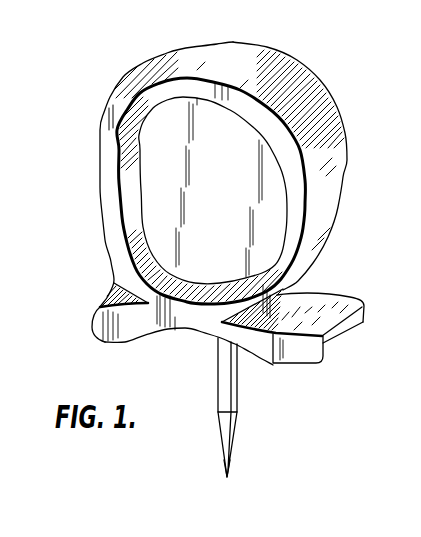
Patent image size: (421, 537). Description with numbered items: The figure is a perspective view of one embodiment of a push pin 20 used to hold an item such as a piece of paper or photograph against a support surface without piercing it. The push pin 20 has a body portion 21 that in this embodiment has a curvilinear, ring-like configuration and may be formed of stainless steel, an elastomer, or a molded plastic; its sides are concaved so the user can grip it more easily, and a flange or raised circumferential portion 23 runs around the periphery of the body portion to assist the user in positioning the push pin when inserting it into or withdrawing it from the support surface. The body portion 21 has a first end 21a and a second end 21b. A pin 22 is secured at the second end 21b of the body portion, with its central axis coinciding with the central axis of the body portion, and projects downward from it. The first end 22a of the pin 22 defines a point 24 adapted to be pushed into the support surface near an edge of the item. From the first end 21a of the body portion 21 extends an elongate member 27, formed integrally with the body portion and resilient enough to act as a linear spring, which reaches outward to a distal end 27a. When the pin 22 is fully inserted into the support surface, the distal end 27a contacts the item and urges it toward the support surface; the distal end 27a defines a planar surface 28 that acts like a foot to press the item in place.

The push pin 20 is at (318, 62).
The body portion 21 is at (227, 195).
The first end of body portion 21a is at (262, 65).
The second end of body portion 21b is at (190, 330).
The pin 22 is at (235, 394).
The first end of pin 22a is at (224, 477).
The flange or raised circumferential portion 23 is at (110, 182).
The point 24 is at (229, 476).
The elongate member 27 is at (335, 298).
The distal end of elongate member 27a is at (343, 330).
The planar surface 28 is at (291, 365).